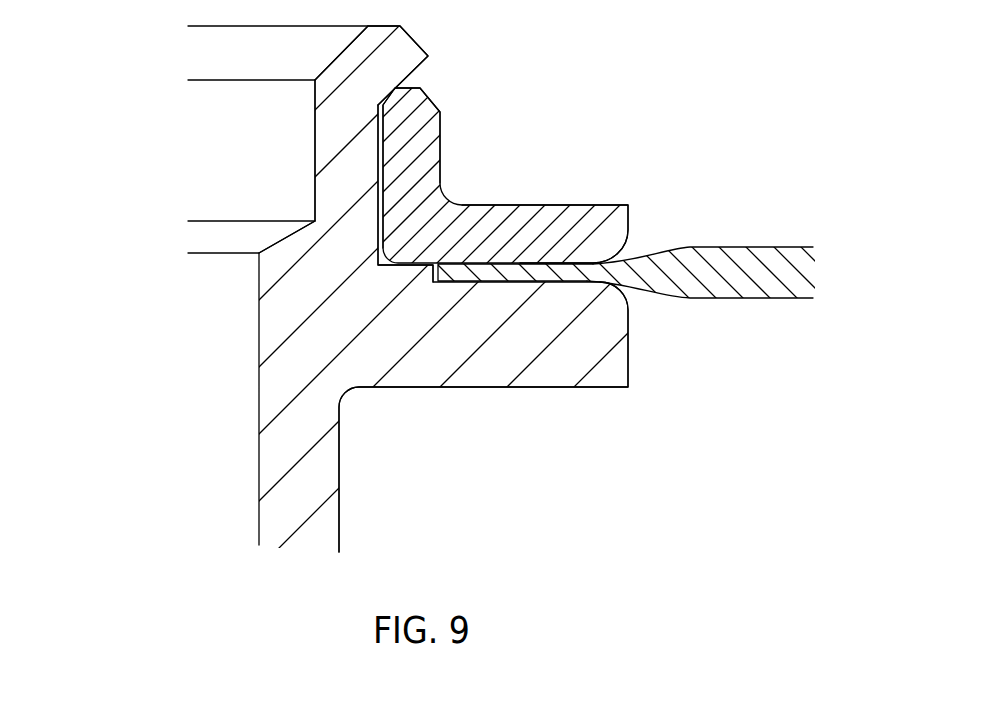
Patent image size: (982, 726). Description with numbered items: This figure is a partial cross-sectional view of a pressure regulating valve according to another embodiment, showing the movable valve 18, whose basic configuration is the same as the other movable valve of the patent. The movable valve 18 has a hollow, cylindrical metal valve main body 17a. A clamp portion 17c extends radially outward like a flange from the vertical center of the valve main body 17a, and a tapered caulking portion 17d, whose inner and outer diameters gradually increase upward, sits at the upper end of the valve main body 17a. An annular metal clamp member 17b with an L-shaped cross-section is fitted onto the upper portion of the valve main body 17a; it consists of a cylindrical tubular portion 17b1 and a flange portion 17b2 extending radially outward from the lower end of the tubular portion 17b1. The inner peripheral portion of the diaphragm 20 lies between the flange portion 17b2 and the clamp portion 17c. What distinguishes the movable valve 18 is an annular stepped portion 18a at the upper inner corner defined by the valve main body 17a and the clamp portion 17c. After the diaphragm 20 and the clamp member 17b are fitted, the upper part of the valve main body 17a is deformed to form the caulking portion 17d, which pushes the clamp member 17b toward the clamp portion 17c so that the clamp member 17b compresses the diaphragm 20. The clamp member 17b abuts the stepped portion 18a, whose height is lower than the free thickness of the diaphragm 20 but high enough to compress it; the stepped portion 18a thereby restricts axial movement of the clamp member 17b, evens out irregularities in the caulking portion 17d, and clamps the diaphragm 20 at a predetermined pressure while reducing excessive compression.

The valve main body 17a is at (340, 135).
The clamp member 17b is at (558, 203).
The tubular portion 17b1 is at (408, 125).
The flange portion 17b2 is at (597, 218).
The clamp portion 17c is at (587, 347).
The caulking portion 17d is at (398, 57).
The movable valve 18 is at (368, 467).
The stepped portion 18a is at (410, 276).
The diaphragm 20 is at (658, 272).